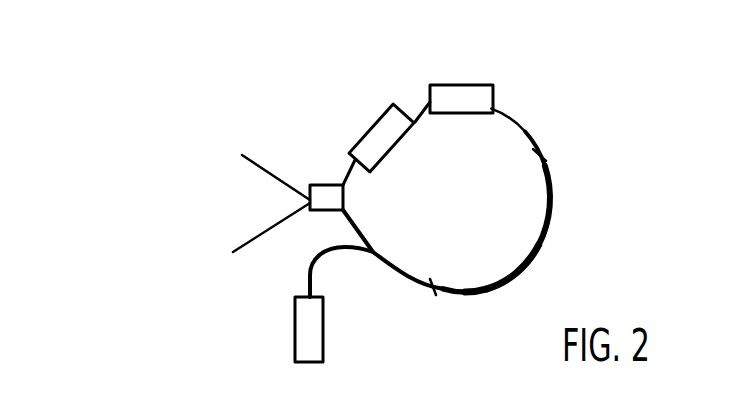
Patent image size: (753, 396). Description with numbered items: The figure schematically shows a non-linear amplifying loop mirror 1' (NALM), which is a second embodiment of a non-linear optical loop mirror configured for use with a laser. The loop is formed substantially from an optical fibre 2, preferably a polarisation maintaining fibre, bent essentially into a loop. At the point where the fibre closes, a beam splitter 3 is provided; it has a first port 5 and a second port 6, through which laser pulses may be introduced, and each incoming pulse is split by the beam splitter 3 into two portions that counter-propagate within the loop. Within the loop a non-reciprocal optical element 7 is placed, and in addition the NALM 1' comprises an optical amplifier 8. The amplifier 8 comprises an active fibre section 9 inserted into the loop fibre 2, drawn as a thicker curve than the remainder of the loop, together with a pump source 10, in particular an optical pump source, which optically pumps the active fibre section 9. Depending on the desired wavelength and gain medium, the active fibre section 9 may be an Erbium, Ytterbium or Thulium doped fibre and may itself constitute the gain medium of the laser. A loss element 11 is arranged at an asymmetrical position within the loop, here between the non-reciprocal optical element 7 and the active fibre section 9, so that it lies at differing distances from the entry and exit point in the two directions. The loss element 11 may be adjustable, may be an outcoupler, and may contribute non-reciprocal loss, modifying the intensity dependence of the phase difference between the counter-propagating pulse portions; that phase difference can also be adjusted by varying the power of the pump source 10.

The non-linear amplifying loop mirror 1' is at (276, 52).
The optical fibre 2 is at (513, 118).
The beam splitter 3 is at (327, 194).
The first port 5 is at (264, 168).
The second port 6 is at (263, 237).
The non-reciprocal optical element 7 is at (372, 136).
The optical amplifier 8 is at (572, 222).
The active fibre section 9 is at (500, 292).
The pump source 10 is at (316, 330).
The loss element 11 is at (470, 93).